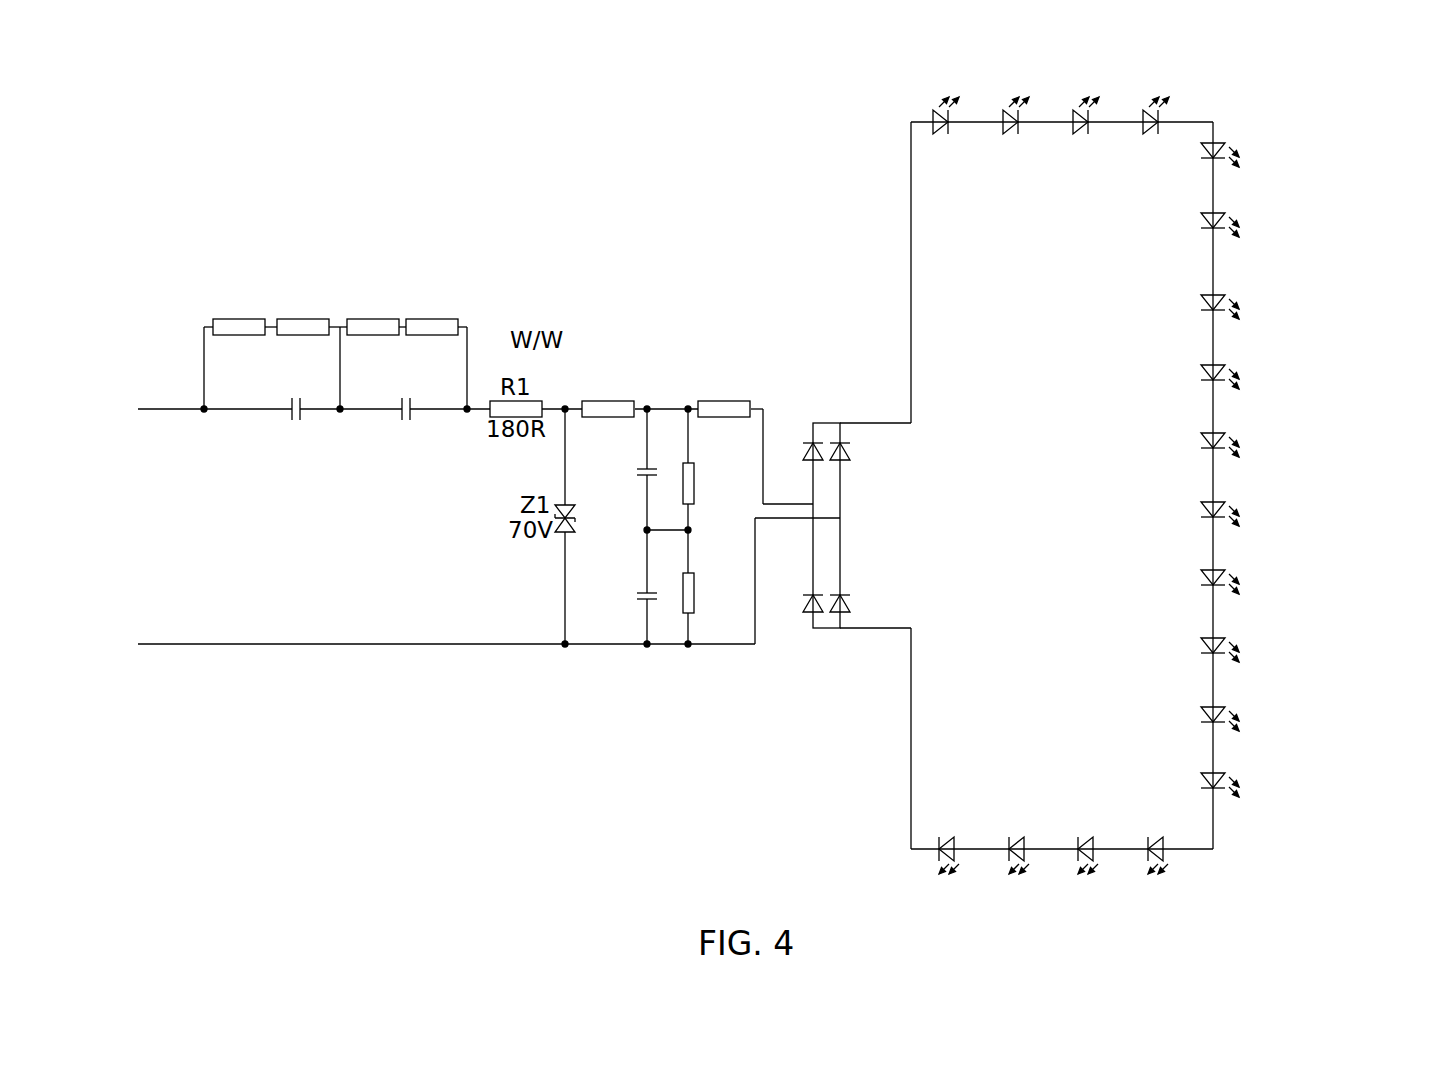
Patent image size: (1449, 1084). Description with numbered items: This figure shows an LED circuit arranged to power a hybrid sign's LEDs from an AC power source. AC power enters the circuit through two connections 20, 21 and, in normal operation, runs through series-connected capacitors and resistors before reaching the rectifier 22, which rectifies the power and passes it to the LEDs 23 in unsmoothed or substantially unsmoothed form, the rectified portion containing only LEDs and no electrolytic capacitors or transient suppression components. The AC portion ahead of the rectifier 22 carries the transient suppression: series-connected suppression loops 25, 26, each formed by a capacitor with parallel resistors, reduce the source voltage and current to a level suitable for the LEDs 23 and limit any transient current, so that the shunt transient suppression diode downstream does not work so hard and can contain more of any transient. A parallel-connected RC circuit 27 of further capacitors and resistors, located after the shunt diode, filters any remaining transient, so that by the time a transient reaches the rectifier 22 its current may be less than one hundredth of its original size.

The connection 20 is at (300, 645).
The connection 21 is at (162, 408).
The rectifier 22 is at (834, 392).
The LEDs 23 is at (1362, 192).
The loop 25 is at (277, 287).
The loop 26 is at (402, 287).
The RC circuit 27 is at (675, 365).